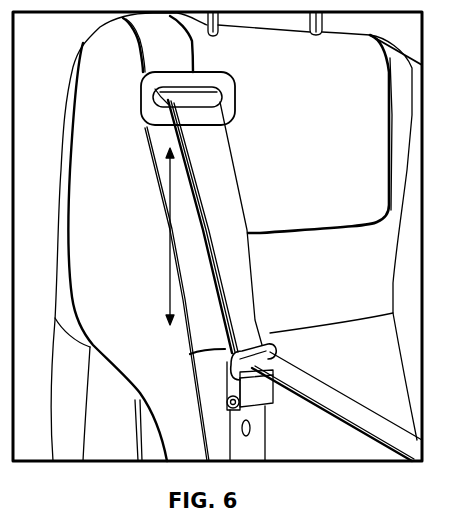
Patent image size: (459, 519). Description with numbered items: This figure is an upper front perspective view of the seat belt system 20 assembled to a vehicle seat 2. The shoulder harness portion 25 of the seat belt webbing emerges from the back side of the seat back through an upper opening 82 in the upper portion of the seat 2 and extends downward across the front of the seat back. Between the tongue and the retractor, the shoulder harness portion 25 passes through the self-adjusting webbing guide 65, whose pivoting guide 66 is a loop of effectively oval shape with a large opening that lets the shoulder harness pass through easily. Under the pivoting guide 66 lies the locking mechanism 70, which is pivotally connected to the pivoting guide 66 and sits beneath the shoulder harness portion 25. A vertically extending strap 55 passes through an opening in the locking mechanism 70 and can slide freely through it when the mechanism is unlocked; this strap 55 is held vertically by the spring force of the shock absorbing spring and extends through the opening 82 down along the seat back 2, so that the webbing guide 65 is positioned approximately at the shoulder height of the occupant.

The vehicle seat 2 is at (380, 280).
The seat belt system 20 is at (295, 280).
The shoulder harness portion 25 is at (230, 190).
The vertical strap webbing 55 is at (200, 247).
The self-adjusting webbing guide 65 is at (254, 398).
The pivoting guide 66 is at (264, 342).
The locking mechanism 70 is at (226, 398).
The upper opening 82 is at (163, 90).